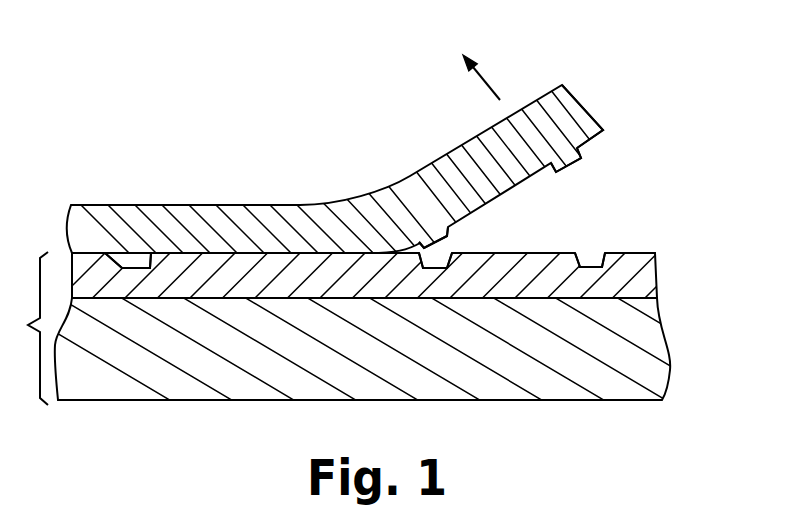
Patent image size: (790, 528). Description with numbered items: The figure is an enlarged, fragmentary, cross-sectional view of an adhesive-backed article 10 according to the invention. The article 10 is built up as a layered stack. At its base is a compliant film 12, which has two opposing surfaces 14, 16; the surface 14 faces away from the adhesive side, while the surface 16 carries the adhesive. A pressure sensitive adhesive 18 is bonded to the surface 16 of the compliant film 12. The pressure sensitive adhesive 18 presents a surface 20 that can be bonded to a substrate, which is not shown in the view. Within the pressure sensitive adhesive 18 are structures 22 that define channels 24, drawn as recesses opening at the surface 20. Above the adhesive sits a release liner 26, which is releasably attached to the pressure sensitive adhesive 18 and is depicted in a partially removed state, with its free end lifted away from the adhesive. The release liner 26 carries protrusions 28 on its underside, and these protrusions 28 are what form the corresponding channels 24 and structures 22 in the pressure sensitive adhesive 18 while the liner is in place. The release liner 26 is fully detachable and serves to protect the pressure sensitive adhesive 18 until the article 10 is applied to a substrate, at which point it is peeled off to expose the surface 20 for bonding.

The article 10 is at (25, 328).
The compliant film 12 is at (635, 357).
The surface 14 is at (577, 403).
The surface 16 is at (657, 298).
The pressure sensitive adhesive 18 is at (643, 278).
The surface 20 is at (655, 253).
The structures 22 is at (643, 257).
The channels 24 is at (597, 246).
The release liner 26 is at (572, 115).
The protrusions 28 is at (548, 170).